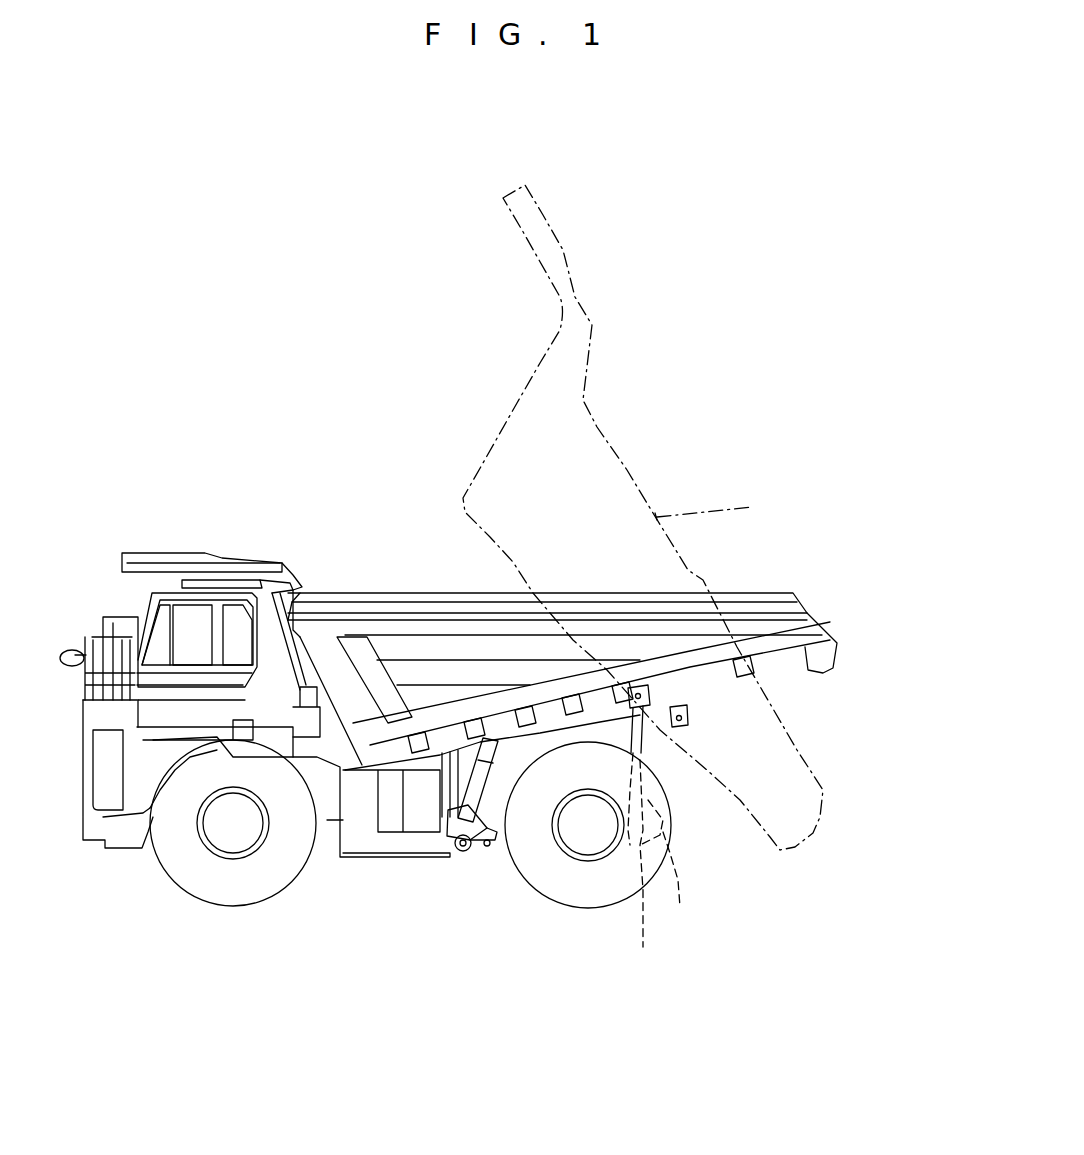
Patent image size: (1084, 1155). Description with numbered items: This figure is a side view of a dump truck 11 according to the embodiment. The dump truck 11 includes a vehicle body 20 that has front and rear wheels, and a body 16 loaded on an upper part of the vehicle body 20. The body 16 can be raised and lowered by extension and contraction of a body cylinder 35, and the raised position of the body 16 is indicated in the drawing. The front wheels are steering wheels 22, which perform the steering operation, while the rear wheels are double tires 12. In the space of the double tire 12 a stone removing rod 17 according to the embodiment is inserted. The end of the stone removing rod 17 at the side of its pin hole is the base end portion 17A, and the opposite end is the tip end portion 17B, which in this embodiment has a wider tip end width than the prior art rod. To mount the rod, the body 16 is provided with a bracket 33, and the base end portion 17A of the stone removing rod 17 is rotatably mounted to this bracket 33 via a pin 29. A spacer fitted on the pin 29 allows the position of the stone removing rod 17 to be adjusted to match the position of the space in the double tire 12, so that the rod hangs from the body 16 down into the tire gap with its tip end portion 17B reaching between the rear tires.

The dump truck 11 is at (722, 373).
The double tires 12 is at (578, 908).
The body 16 is at (607, 636).
The stone removing rod 17 is at (668, 847).
The base end portion 17A is at (663, 737).
The tip end portion 17B is at (647, 877).
The vehicle body 20 is at (832, 875).
The steering wheels 22 is at (236, 908).
The pin 29 is at (682, 700).
The bracket 33 is at (742, 680).
The body cylinder 35 is at (440, 830).